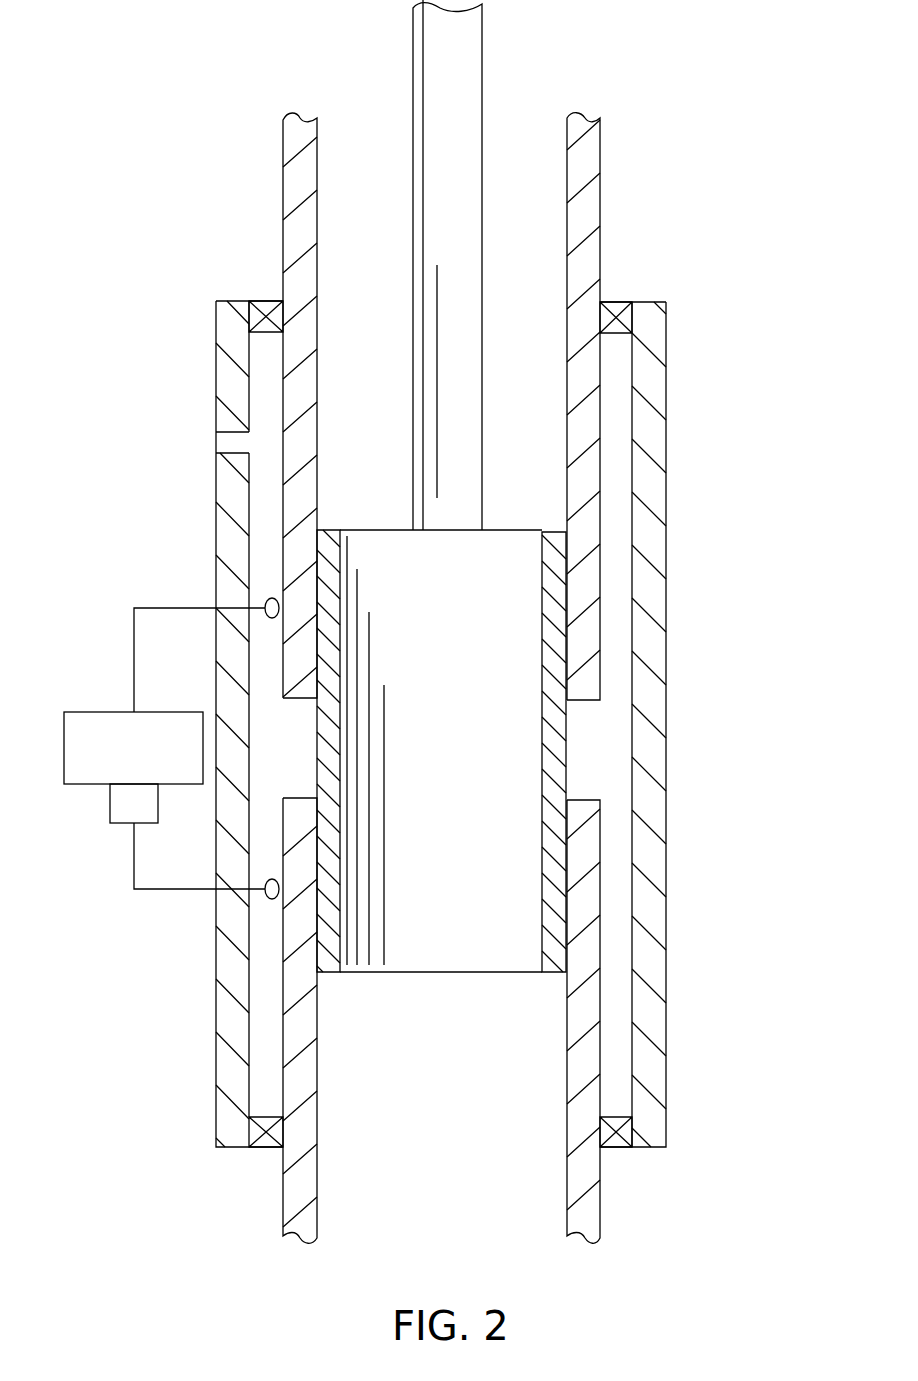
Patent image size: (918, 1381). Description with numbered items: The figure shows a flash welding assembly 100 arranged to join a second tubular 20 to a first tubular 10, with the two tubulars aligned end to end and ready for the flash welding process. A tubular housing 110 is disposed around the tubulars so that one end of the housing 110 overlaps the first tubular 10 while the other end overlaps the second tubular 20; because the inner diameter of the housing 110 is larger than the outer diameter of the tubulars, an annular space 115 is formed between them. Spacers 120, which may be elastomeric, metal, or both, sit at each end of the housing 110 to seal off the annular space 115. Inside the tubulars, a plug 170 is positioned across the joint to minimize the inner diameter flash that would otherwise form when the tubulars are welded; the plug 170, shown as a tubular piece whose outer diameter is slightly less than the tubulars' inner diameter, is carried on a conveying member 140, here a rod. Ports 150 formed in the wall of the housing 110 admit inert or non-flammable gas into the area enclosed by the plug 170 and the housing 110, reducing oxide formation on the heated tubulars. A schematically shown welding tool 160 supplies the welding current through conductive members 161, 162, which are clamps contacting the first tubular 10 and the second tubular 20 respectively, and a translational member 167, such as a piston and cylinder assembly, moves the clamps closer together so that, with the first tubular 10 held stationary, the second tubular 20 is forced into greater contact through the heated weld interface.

The flash welding assembly 100 is at (132, 81).
The conveying member 140 is at (413, 22).
The spacers 120 is at (615, 302).
The tubular housing 110 is at (667, 497).
The annular space 115 is at (618, 582).
The second tubular 20 is at (600, 683).
The first tubular 10 is at (600, 928).
The plug 170 is at (566, 757).
The ports 150 is at (216, 440).
The welding tool 160 is at (82, 712).
The translational member 167 is at (134, 803).
The conductive member 162 is at (262, 601).
The conductive member 161 is at (262, 893).